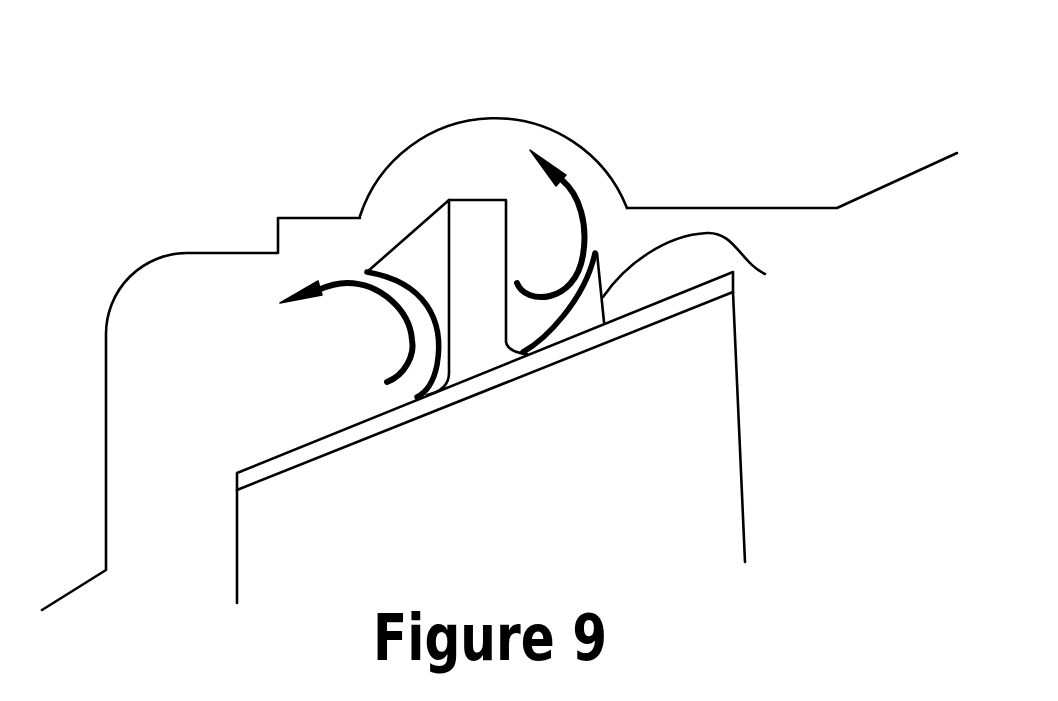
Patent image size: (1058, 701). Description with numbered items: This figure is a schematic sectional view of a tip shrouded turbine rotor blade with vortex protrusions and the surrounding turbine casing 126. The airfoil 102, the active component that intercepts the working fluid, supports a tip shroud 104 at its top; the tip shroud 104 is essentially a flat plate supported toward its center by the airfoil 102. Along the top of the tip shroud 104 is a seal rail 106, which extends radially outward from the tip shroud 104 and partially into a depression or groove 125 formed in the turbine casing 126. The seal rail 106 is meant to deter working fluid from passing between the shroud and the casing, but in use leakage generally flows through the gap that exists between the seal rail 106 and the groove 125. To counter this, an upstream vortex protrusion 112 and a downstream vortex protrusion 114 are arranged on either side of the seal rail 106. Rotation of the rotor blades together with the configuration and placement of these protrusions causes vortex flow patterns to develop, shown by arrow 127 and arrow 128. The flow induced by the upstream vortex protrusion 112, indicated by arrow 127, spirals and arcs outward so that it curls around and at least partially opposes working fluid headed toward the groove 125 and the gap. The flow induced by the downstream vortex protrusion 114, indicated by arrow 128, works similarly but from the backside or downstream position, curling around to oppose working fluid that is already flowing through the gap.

The airfoil 102 is at (688, 413).
The tip shroud 104 is at (300, 455).
The seal rail 106 is at (468, 290).
The upstream vortex protrusion 112 is at (422, 253).
The downstream vortex protrusion 114 is at (765, 274).
The groove 125 is at (490, 150).
The turbine casing 126 is at (232, 237).
The arrow 127 is at (333, 283).
The arrow 128 is at (583, 200).